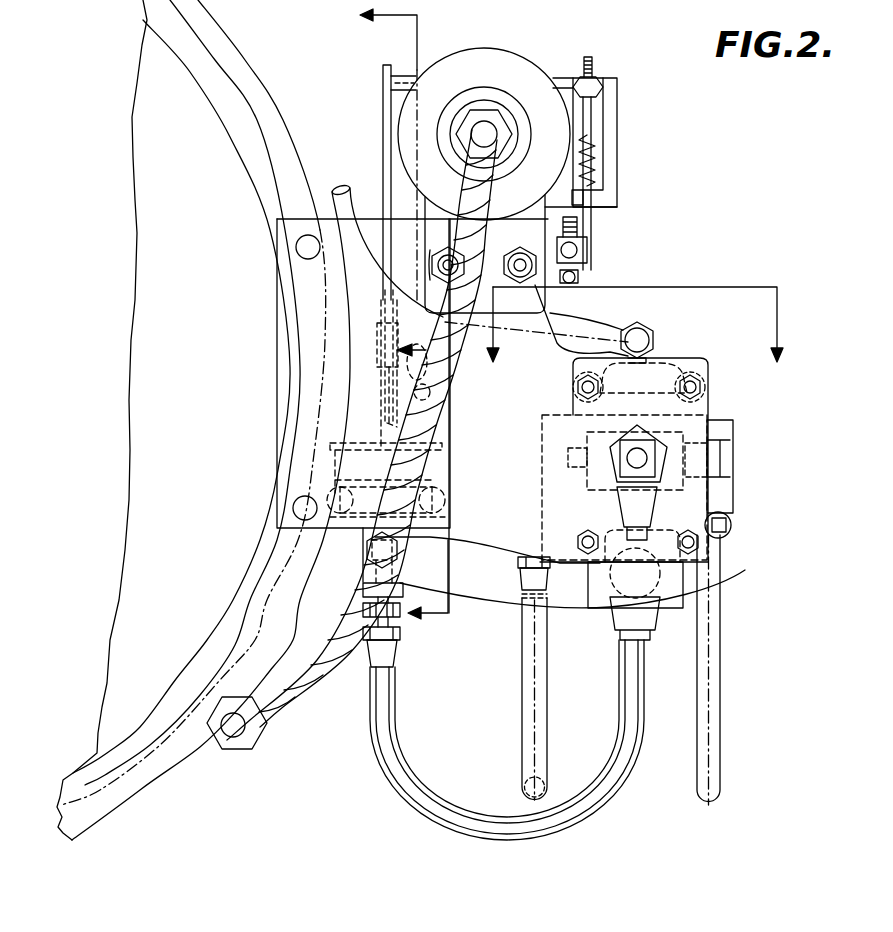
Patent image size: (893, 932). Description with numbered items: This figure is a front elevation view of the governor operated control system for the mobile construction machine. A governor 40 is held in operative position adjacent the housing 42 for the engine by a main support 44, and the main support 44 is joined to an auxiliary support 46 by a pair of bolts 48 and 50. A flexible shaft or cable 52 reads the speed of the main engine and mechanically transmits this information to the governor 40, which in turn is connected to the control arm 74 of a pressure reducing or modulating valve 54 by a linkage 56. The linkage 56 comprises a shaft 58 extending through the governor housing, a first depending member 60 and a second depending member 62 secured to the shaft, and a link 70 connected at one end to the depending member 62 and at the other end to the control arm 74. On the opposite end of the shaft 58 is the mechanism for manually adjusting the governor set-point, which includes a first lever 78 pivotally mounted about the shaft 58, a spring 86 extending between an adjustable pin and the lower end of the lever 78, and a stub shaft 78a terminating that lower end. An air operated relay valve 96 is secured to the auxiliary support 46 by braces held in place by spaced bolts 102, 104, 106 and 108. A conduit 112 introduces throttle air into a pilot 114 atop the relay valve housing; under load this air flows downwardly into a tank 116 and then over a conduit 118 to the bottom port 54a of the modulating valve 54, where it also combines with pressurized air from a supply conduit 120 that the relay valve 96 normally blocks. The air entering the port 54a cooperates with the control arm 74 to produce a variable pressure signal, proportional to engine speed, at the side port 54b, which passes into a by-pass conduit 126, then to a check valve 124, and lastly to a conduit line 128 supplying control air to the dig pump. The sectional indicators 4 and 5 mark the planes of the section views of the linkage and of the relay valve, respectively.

The section line 4- 4 is at (404, 322).
The section line 5- 5 is at (634, 324).
The governor 40 is at (545, 64).
The housing 42 is at (215, 419).
The main support 44 is at (533, 200).
The auxiliary support 46 is at (517, 497).
The bolt 48 is at (444, 246).
The bolt 50 is at (528, 282).
The flexible shaft or cable 52 is at (283, 677).
The pressure reducing or modulating valve 54 is at (420, 480).
The bottom port 54a is at (405, 568).
The side port 54b is at (437, 528).
The linkage 56 is at (437, 360).
The shaft 58 is at (403, 76).
The first depending member 60 is at (383, 147).
The second depending member 62 is at (393, 398).
The link 70 is at (430, 400).
The control arm 74 is at (378, 360).
The first lever 78 is at (617, 122).
The stub shaft 78a is at (598, 200).
The spring 86 is at (597, 160).
The air operated relay valve 96 is at (693, 430).
The bolt 102 is at (580, 373).
The bolt 104 is at (703, 387).
The bolt 106 is at (607, 515).
The bolt 108 is at (700, 560).
The conduit 112 is at (578, 333).
The pilot 114 is at (650, 380).
The tank 116 is at (637, 577).
The conduit 118 is at (507, 830).
The supply conduit 120 is at (537, 702).
The check valve 124 is at (720, 463).
The by-pass conduit 126 is at (477, 593).
The conduit line 128 is at (708, 698).